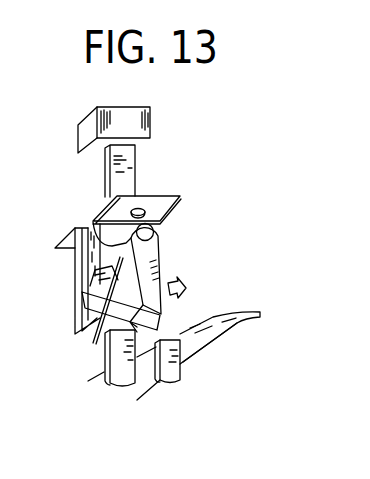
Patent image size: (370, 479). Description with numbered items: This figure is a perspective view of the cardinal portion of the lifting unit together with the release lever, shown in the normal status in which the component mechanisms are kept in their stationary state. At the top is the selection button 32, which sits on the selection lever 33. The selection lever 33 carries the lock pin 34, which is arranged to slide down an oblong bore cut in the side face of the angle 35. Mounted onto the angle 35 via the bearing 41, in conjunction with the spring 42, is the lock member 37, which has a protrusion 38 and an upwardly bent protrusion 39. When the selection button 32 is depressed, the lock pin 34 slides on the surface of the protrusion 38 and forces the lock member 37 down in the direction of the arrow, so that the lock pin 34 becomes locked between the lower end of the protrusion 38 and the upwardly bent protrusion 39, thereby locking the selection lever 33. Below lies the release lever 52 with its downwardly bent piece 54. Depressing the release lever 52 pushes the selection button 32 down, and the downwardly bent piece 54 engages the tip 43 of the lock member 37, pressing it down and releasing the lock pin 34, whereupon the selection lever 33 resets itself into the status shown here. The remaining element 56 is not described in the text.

The selection button 32 is at (140, 122).
The selection lever 33 is at (130, 164).
The lock pin 34 is at (100, 226).
The angle 35 is at (73, 292).
The lock member 37 is at (141, 276).
The protrusion 38 is at (100, 273).
The upwardly bent protrusion 39 is at (97, 314).
The bearing 41 is at (153, 229).
The spring 42 is at (148, 246).
The tip 43 is at (147, 313).
The release lever 52 is at (207, 334).
The downwardly bent piece 54 is at (172, 386).
The post 56 is at (123, 386).